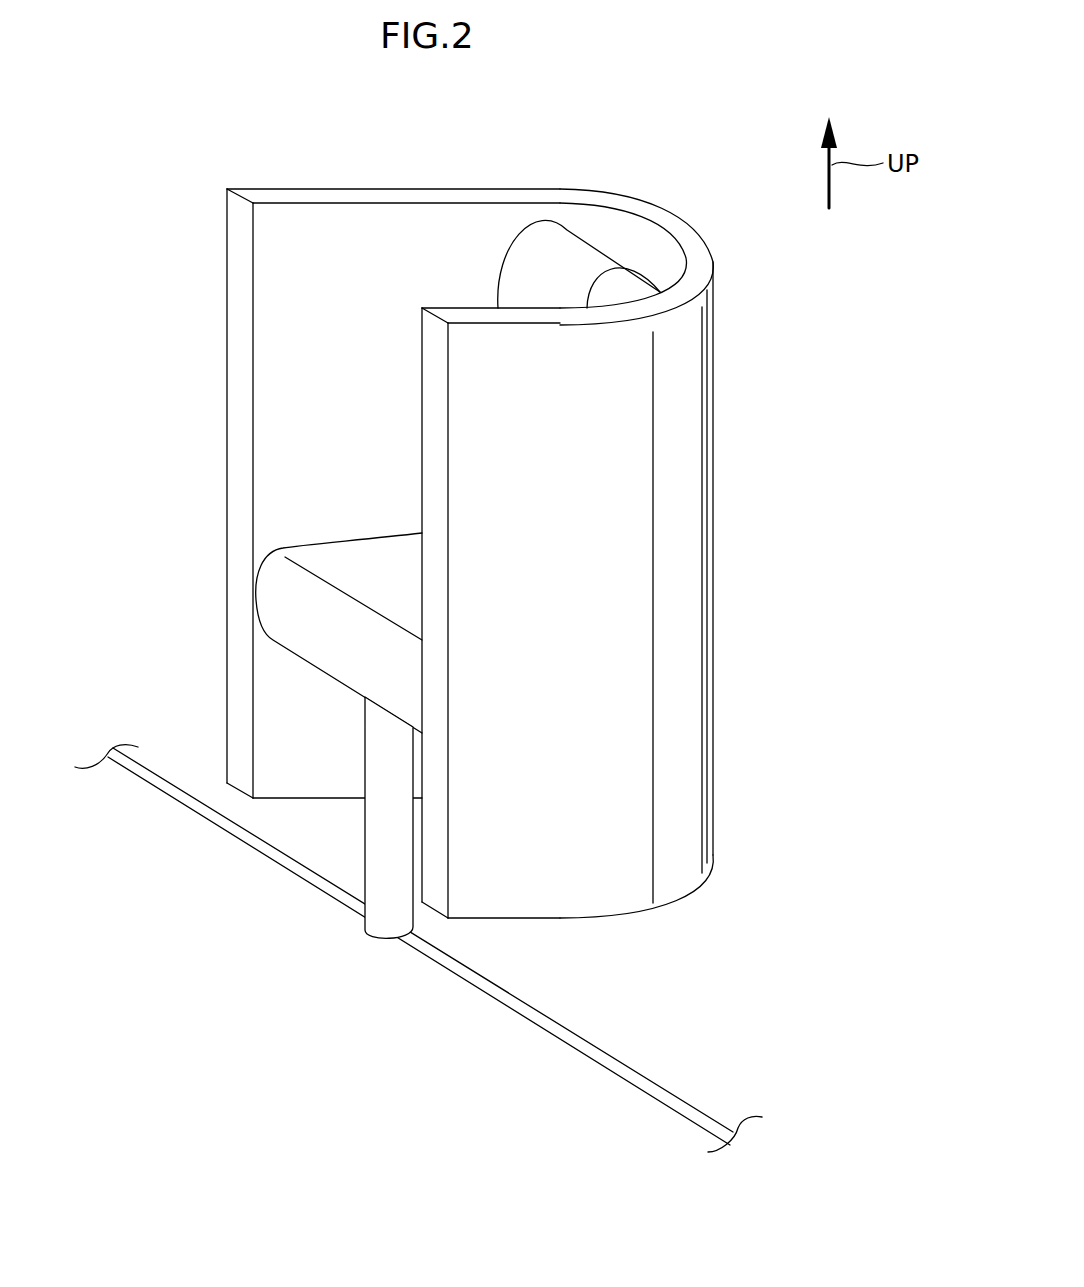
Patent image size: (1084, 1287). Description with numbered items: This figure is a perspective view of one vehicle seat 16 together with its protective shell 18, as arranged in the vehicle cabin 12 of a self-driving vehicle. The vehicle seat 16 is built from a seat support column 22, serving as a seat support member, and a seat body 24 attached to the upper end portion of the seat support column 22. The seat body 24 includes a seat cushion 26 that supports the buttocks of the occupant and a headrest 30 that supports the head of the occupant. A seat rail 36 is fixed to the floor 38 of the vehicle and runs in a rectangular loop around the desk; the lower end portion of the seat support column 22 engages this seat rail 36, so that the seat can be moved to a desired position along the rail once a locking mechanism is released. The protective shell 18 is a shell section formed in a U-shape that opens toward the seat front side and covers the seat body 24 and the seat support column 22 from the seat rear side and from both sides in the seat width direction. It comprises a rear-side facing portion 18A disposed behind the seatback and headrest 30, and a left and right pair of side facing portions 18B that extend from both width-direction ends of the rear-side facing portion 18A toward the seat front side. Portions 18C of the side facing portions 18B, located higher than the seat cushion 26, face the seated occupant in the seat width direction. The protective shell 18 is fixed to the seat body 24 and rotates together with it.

The vehicle cabin 12 is at (153, 300).
The vehicle seat 16 is at (378, 228).
The protective shell 18 is at (720, 490).
The rear-side facing portion 18A is at (680, 230).
The side facing portion 18B is at (258, 188).
The portion of side facing portion 18C is at (297, 267).
The seat support column 22 is at (380, 850).
The seat body 24 is at (266, 600).
The seat cushion 26 is at (327, 643).
The headrest 30 is at (550, 247).
The seat rail 36 is at (570, 1040).
The floor 38 is at (392, 1035).